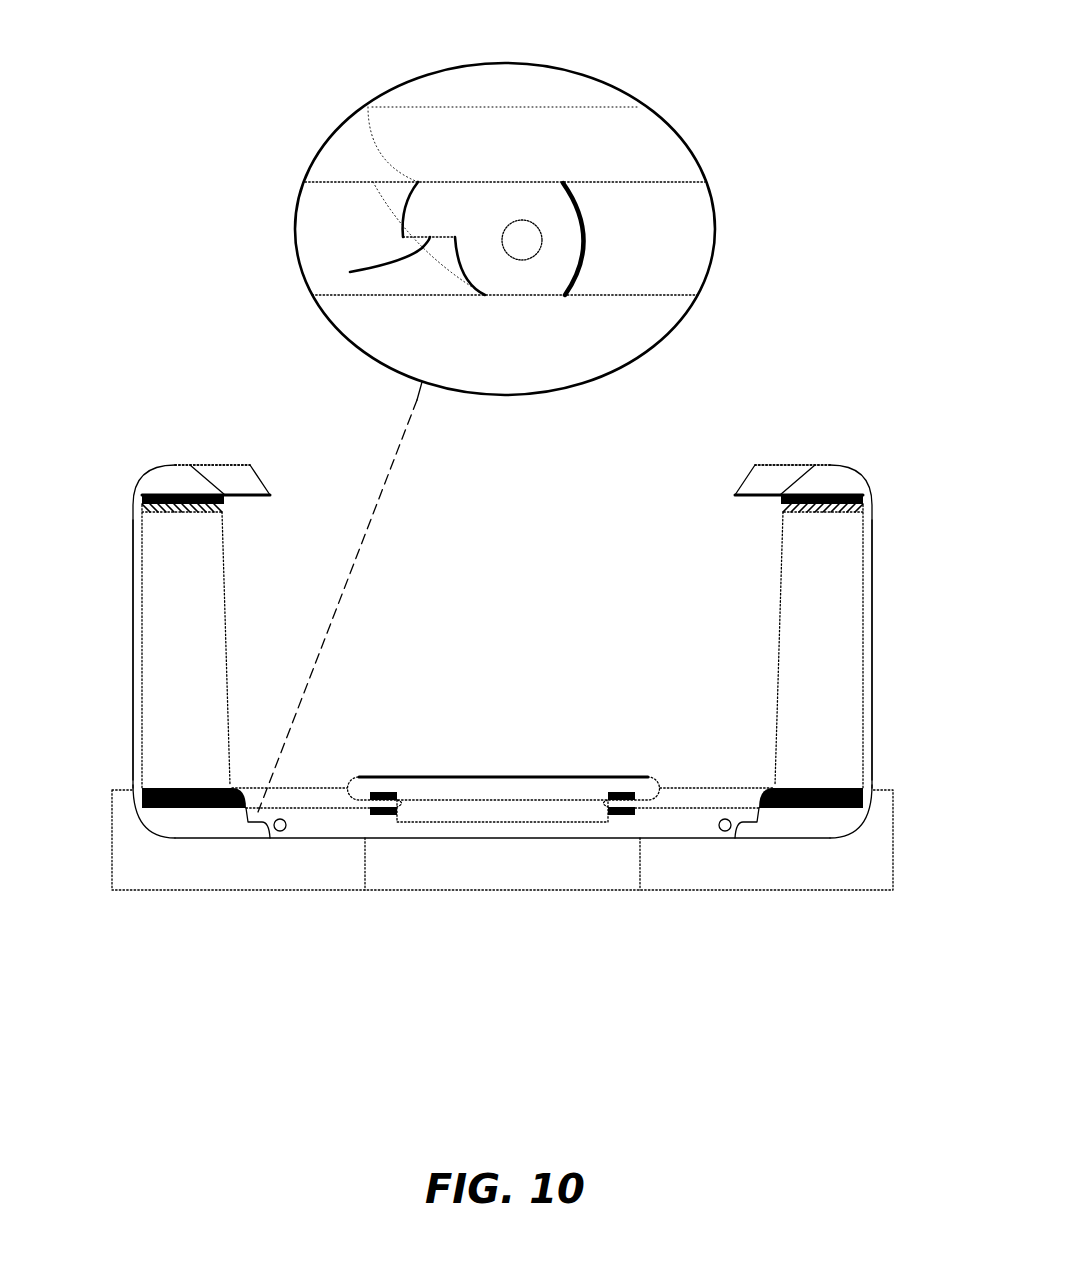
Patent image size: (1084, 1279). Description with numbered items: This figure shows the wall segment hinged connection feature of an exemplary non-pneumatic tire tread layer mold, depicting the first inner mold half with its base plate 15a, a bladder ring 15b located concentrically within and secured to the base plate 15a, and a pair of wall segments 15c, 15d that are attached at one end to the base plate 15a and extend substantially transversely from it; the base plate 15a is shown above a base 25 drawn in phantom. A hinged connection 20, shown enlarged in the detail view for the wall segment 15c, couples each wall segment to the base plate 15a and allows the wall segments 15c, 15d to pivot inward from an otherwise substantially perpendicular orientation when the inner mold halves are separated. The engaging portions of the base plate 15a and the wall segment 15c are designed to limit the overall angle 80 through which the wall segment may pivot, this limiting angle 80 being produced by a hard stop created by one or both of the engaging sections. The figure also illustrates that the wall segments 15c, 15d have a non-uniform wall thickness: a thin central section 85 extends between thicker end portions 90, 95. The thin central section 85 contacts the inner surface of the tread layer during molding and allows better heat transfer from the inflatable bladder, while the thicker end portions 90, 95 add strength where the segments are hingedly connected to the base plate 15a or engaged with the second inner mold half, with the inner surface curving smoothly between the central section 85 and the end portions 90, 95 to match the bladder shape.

The hinged connection 20 is at (521, 238).
The base plate 15a is at (678, 826).
The bladder ring 15b is at (420, 788).
The wall segment 15c is at (137, 533).
The wall segment 15d is at (865, 545).
The base 25 is at (291, 873).
The limiting angle 80 is at (350, 272).
The thin central section 85 is at (138, 635).
The thicker end portion 90 is at (170, 472).
The thicker end portion 95 is at (193, 820).